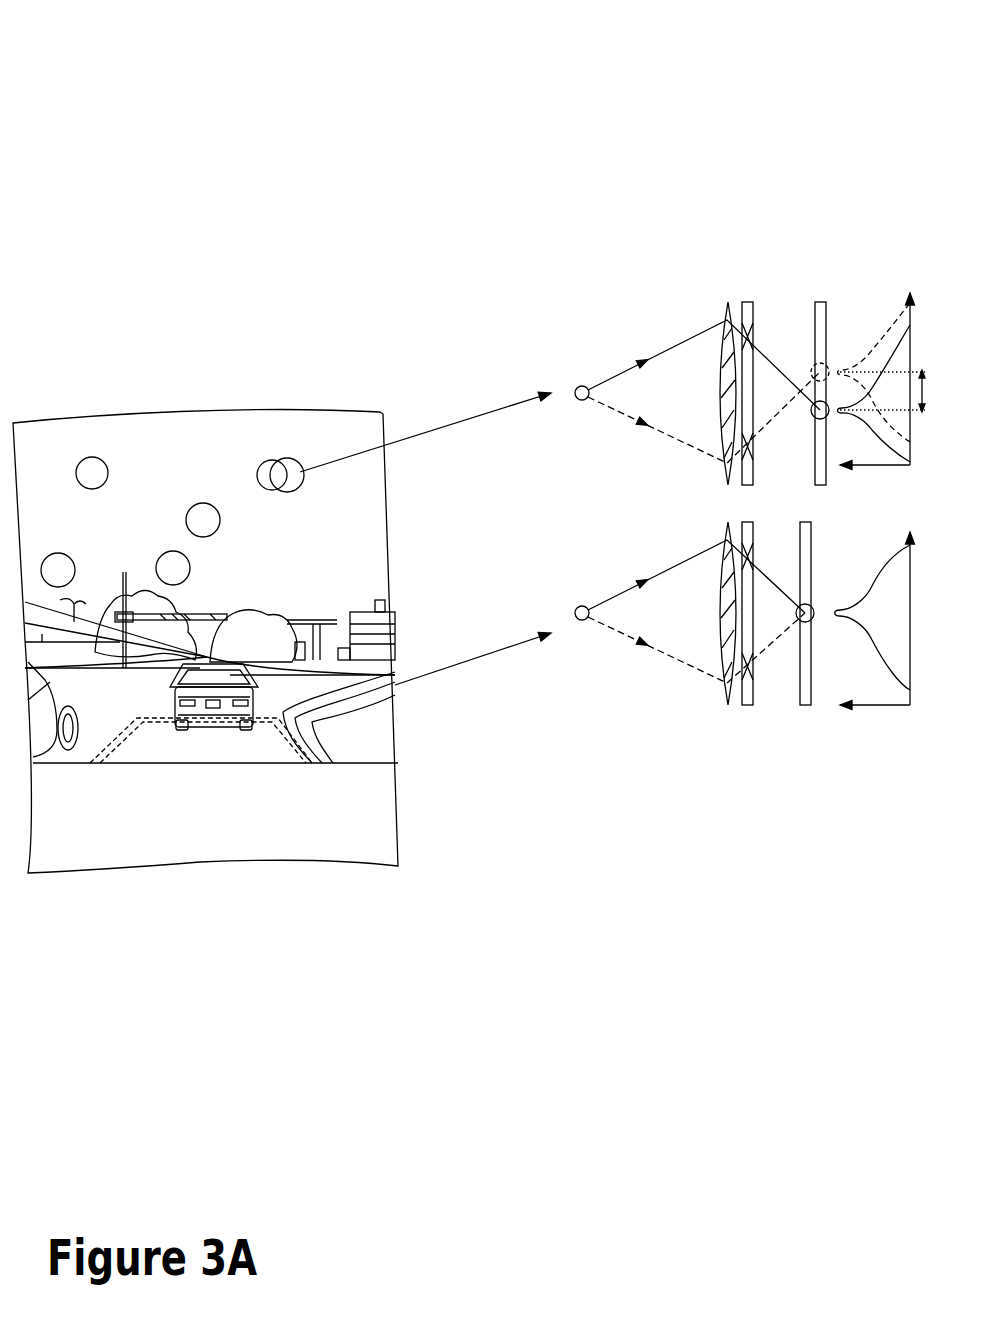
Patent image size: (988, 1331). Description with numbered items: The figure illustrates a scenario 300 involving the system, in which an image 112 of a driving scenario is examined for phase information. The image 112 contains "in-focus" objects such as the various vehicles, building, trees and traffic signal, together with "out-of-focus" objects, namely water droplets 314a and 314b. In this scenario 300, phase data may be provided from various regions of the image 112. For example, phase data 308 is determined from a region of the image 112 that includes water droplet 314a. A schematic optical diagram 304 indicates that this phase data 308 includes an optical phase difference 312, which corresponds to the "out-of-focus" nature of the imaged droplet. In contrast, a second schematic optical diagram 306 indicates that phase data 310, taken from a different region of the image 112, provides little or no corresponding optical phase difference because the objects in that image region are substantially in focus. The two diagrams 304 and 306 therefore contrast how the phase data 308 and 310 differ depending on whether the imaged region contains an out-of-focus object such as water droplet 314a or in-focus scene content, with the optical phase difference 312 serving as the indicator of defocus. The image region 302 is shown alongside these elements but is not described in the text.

The scenario 300 is at (628, 92).
The image 112 is at (205, 555).
The displayed scene image 302 is at (325, 375).
The schematic optical diagram 304 is at (753, 275).
The schematic optical diagram 306 is at (790, 747).
The phase data 308 is at (425, 397).
The phase data 310 is at (475, 590).
The optical phase difference 312 is at (865, 371).
The water droplet 314a is at (231, 467).
The water droplet 314b is at (148, 517).